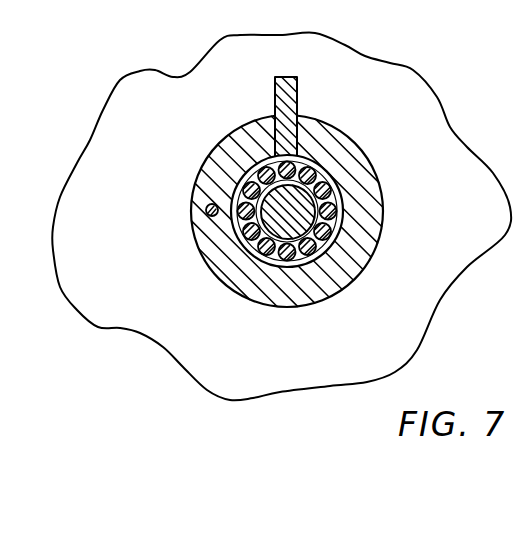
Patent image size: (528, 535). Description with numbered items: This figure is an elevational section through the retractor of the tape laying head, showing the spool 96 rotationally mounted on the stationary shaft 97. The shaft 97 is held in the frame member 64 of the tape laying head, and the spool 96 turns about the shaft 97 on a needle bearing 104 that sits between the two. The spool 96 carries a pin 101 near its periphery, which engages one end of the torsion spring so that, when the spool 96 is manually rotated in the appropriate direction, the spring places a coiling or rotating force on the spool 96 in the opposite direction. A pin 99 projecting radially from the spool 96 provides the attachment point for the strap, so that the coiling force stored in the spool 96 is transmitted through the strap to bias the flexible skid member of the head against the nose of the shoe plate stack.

The frame member 64 is at (443, 245).
The spool 96 is at (363, 145).
The pin 99 is at (298, 96).
The needle bearing 104 is at (220, 180).
The stationary shaft 97 is at (282, 224).
The pin 101 is at (205, 211).